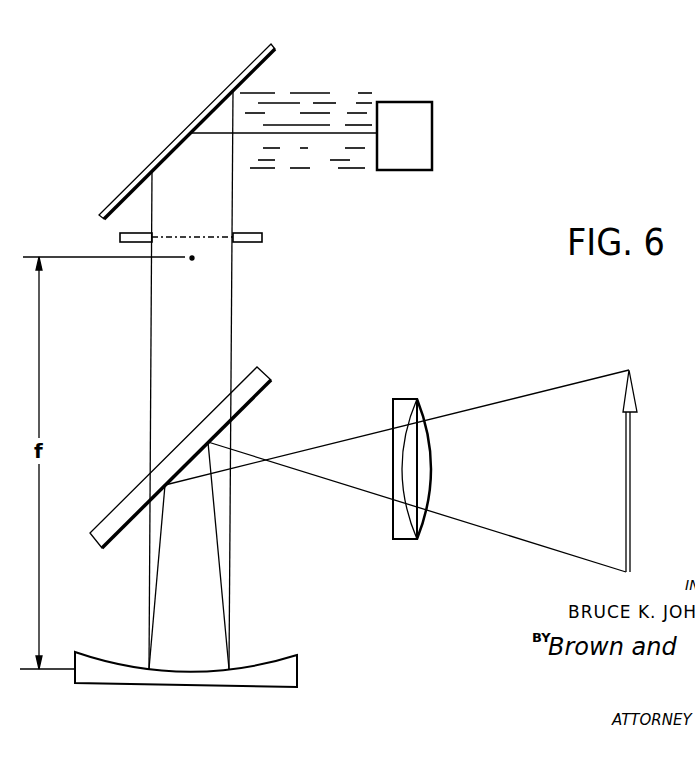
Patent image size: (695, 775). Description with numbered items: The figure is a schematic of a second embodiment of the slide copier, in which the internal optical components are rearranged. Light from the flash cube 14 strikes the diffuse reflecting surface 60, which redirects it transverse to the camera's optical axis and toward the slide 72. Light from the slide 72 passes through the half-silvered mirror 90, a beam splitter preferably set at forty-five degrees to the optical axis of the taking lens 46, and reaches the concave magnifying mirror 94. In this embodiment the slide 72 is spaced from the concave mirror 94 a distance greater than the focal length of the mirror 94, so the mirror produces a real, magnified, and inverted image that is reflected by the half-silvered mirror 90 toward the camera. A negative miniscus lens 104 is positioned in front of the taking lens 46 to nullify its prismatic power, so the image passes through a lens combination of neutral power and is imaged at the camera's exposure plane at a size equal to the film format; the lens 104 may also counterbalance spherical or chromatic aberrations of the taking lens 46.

The flash cube 14 is at (432, 112).
The diffuse reflecting surface 60 is at (262, 66).
The slide 72 is at (268, 237).
The half-silvered mirror 90 is at (270, 377).
The negative miniscus lens 104 is at (409, 399).
The taking lens 46 is at (431, 482).
The concave magnifying mirror 94 is at (297, 668).